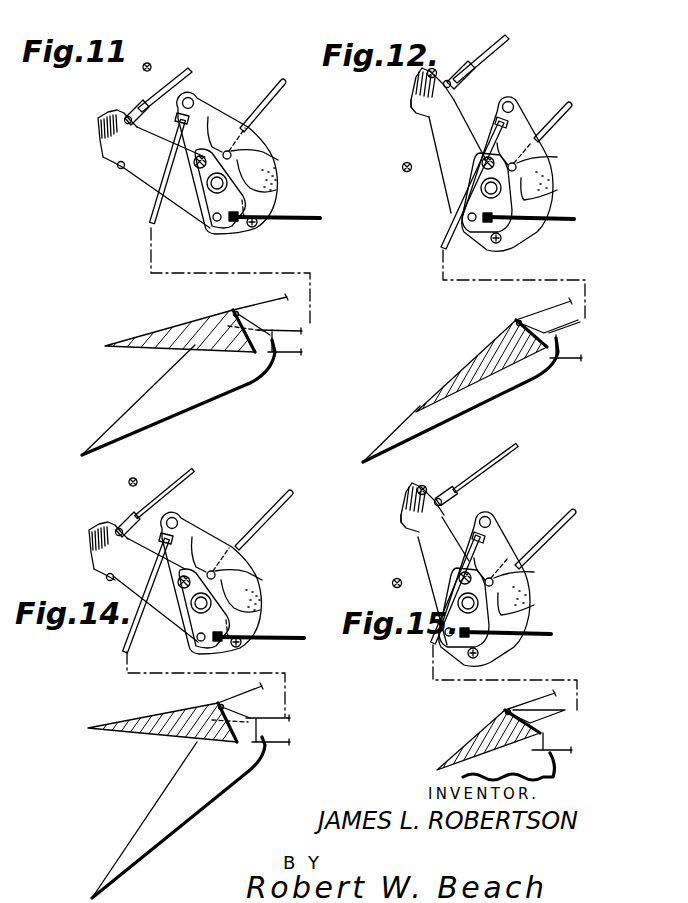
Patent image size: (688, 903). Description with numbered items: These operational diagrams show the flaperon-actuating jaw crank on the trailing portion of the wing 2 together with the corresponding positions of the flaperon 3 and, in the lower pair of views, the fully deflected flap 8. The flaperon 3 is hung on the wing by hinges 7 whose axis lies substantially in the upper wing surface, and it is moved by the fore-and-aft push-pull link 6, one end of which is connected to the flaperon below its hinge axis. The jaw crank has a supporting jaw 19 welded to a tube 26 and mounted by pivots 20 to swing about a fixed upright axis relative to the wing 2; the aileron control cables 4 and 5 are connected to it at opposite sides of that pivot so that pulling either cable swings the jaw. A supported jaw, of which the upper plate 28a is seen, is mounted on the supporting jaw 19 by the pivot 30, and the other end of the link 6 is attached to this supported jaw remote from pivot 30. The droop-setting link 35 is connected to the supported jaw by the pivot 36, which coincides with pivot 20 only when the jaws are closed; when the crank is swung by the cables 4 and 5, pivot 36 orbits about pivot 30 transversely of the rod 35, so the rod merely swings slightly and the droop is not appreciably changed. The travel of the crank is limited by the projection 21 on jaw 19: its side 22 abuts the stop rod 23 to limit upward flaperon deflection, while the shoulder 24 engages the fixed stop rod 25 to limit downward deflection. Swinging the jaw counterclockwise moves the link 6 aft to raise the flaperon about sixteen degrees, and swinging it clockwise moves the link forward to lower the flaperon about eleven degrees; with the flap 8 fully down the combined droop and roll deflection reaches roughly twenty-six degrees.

In FIG. 11, the wing 2 is at (262, 303).
In FIG. 12, the wing 2 is at (540, 308).
In FIG. 14, the wing 2 is at (240, 698).
In FIG. 15, the wing 2 is at (532, 703).
In FIG. 11, the flaperon 3 is at (172, 326).
In FIG. 12, the flaperon 3 is at (478, 354).
In FIG. 14, the flaperon 3 is at (162, 715).
In FIG. 15, the flaperon 3 is at (481, 740).
In FIG. 11, the control cable 4 is at (194, 64).
In FIG. 12, the control cable 4 is at (496, 52).
In FIG. 14, the control cable 4 is at (155, 493).
In FIG. 15, the control cable 4 is at (486, 474).
In FIG. 11, the control cable 5 is at (315, 215).
In FIG. 12, the control cable 5 is at (558, 222).
In FIG. 14, the control cable 5 is at (259, 623).
In FIG. 15, the control cable 5 is at (509, 644).
In FIG. 11, the push-pull link 6 is at (150, 212).
In FIG. 12, the push-pull link 6 is at (446, 230).
In FIG. 14, the push-pull link 6 is at (120, 596).
In FIG. 15, the push-pull link 6 is at (438, 596).
In FIG. 11, the hinge 7 is at (232, 309).
In FIG. 12, the hinge 7 is at (512, 316).
In FIG. 14, the hinge 7 is at (213, 711).
In FIG. 15, the hinge 7 is at (498, 718).
In FIG. 11, the flap 8 is at (155, 384).
In FIG. 12, the flap 8 is at (404, 410).
In FIG. 14, the flap 8 is at (178, 817).
In FIG. 15, the flap 8 is at (519, 767).
In FIG. 11, the supporting jaw 19 is at (181, 194).
In FIG. 12, the supporting jaw 19 is at (438, 144).
In FIG. 14, the supporting jaw 19 is at (155, 593).
In FIG. 15, the supporting jaw 19 is at (448, 569).
In FIG. 11, the pivot 20 is at (214, 118).
In FIG. 12, the pivot 20 is at (487, 152).
In FIG. 14, the pivot 20 is at (211, 576).
In FIG. 15, the pivot 20 is at (484, 584).
In FIG. 11, the projection 21 is at (100, 137).
In FIG. 12, the projection 21 is at (414, 90).
In FIG. 14, the projection 21 is at (90, 545).
In FIG. 15, the projection 21 is at (405, 507).
In FIG. 11, the side of projection 22 is at (110, 161).
In FIG. 12, the side of projection 22 is at (411, 114).
In FIG. 14, the side of projection 22 is at (83, 575).
In FIG. 15, the side of projection 22 is at (383, 530).
In FIG. 11, the stop rod 23 is at (118, 170).
In FIG. 12, the stop rod 23 is at (403, 166).
In FIG. 14, the stop rod 23 is at (93, 587).
In FIG. 15, the stop rod 23 is at (387, 569).
In FIG. 11, the shoulder 24 is at (104, 114).
In FIG. 12, the shoulder 24 is at (427, 68).
In FIG. 14, the shoulder 24 is at (79, 518).
In FIG. 15, the shoulder 24 is at (395, 487).
In FIG. 11, the fixed stop rod 25 is at (151, 62).
In FIG. 12, the fixed stop rod 25 is at (435, 68).
In FIG. 14, the fixed stop rod 25 is at (110, 485).
In FIG. 15, the fixed stop rod 25 is at (438, 474).
In FIG. 11, the tube 26 is at (276, 186).
In FIG. 12, the tube 26 is at (478, 191).
In FIG. 14, the tube 26 is at (238, 608).
In FIG. 15, the tube 26 is at (504, 607).
In FIG. 11, the upper plate of supported jaw 28a is at (280, 170).
In FIG. 12, the upper plate of supported jaw 28a is at (540, 190).
In FIG. 14, the upper plate of supported jaw 28a is at (277, 584).
In FIG. 15, the upper plate of supported jaw 28a is at (546, 594).
In FIG. 11, the pivot 30 is at (262, 226).
In FIG. 12, the pivot 30 is at (508, 246).
In FIG. 14, the pivot 30 is at (258, 649).
In FIG. 15, the pivot 30 is at (500, 661).
In FIG. 11, the link 35 is at (279, 100).
In FIG. 12, the link 35 is at (558, 114).
In FIG. 14, the link 35 is at (264, 513).
In FIG. 15, the link 35 is at (545, 526).
In FIG. 11, the pivot 36 is at (268, 152).
In FIG. 12, the pivot 36 is at (544, 167).
In FIG. 14, the pivot 36 is at (237, 574).
In FIG. 15, the pivot 36 is at (517, 586).